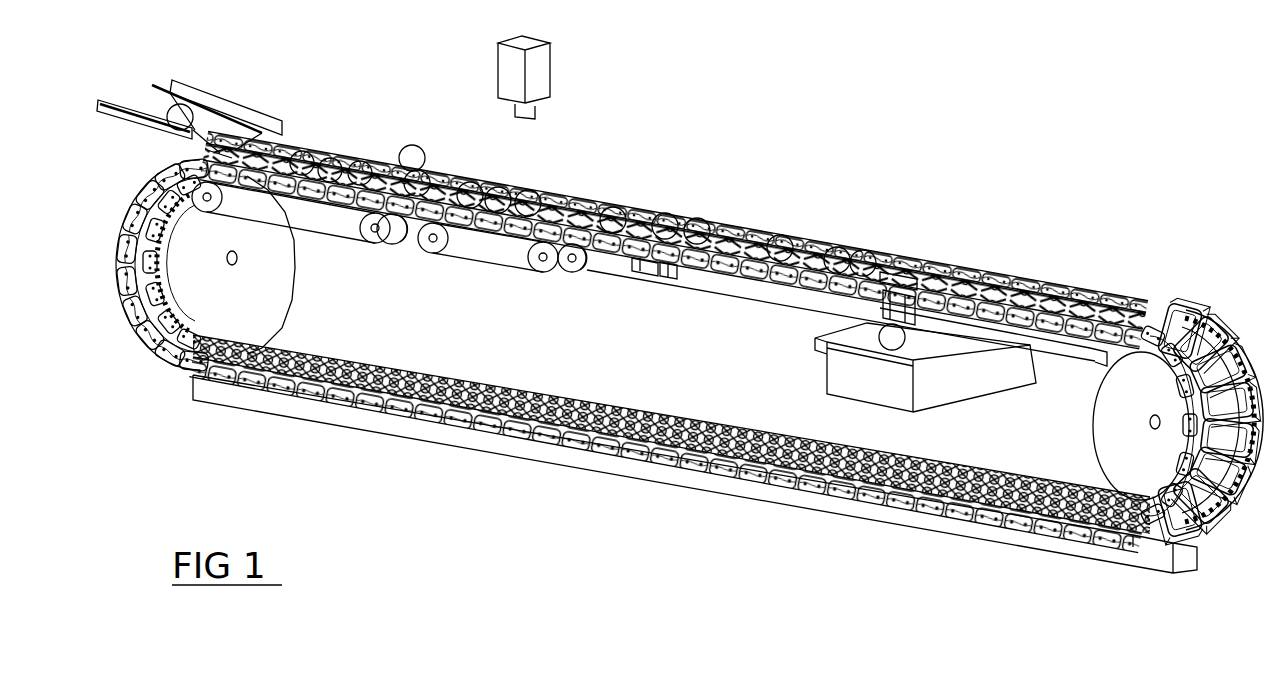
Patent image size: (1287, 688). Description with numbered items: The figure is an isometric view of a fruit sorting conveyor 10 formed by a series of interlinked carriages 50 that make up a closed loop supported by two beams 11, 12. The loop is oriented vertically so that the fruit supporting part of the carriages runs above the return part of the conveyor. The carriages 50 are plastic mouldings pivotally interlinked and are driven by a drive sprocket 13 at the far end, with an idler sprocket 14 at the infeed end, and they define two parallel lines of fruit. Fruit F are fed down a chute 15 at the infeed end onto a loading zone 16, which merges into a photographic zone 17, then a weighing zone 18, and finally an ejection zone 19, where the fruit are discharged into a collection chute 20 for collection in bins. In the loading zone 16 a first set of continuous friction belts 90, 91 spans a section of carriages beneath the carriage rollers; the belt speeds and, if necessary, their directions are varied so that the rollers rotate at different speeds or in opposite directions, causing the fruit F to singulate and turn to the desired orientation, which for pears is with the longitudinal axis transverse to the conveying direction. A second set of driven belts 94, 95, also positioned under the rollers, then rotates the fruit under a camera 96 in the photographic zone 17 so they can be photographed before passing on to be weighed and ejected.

The conveyor 10 is at (840, 190).
The beam 11 is at (758, 312).
The beam 12 is at (566, 476).
The drive sprocket 13 is at (1106, 405).
The idler sprocket 14 is at (283, 281).
The chute 15 is at (160, 82).
The loading zone 16 is at (342, 130).
The photographic zone 17 is at (552, 165).
The weighing zone 18 is at (729, 198).
The ejection zone 19 is at (969, 242).
The collection chute 20 is at (942, 389).
The carriage 50 is at (602, 188).
The friction belt 90 is at (330, 243).
The friction belt 91 is at (408, 250).
The driven belt 94 is at (492, 270).
The driven belt 95 is at (577, 278).
The camera 96 is at (550, 66).
The fruit F is at (163, 124).